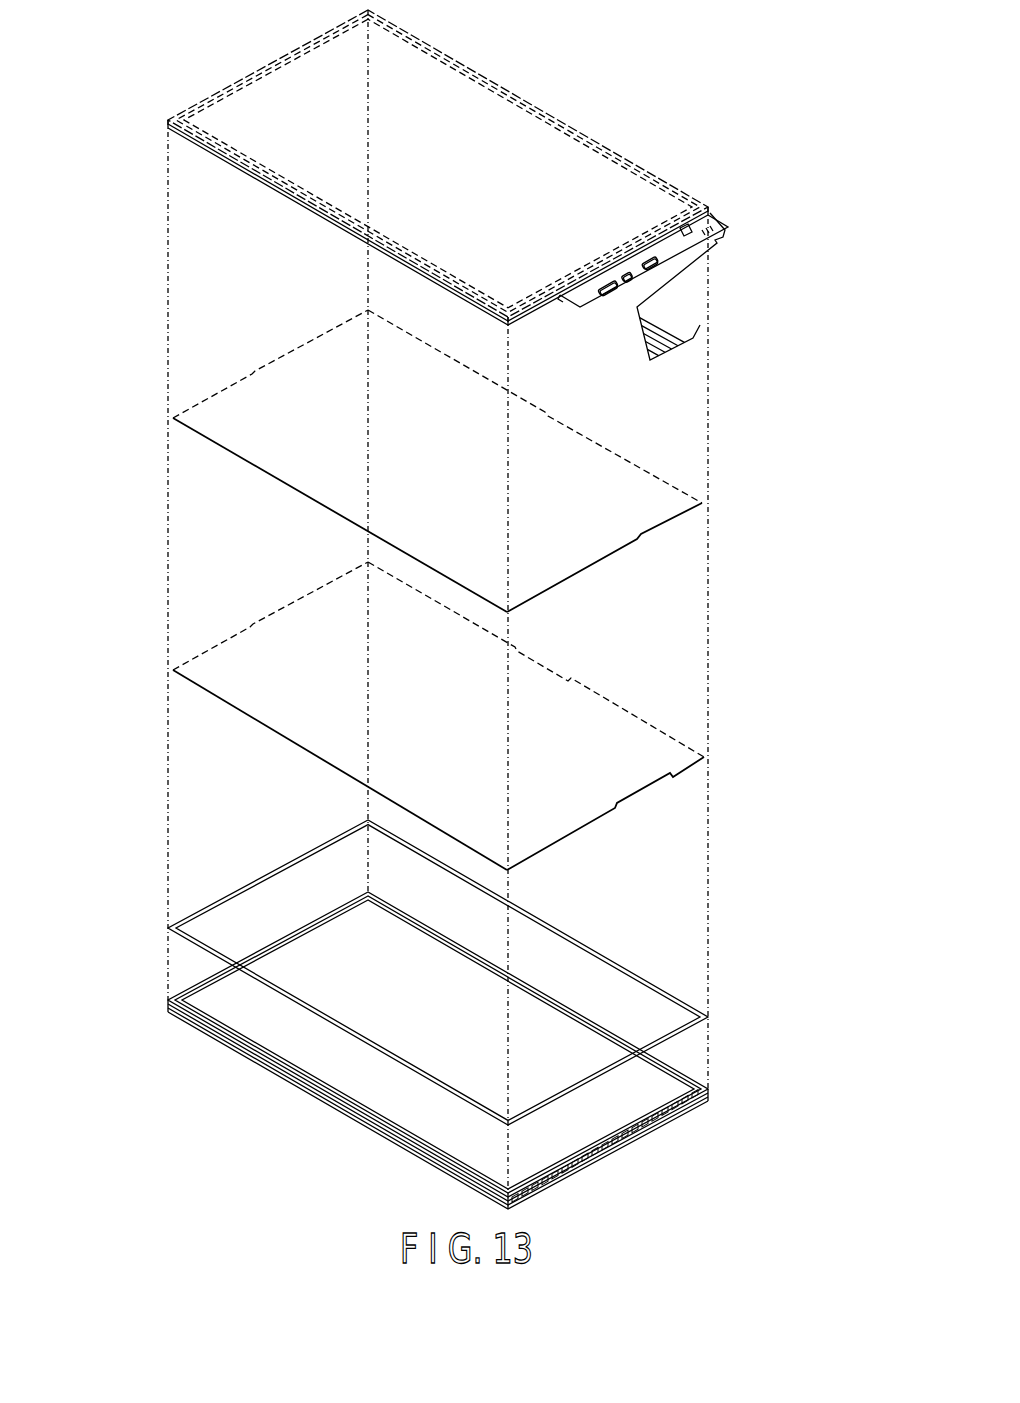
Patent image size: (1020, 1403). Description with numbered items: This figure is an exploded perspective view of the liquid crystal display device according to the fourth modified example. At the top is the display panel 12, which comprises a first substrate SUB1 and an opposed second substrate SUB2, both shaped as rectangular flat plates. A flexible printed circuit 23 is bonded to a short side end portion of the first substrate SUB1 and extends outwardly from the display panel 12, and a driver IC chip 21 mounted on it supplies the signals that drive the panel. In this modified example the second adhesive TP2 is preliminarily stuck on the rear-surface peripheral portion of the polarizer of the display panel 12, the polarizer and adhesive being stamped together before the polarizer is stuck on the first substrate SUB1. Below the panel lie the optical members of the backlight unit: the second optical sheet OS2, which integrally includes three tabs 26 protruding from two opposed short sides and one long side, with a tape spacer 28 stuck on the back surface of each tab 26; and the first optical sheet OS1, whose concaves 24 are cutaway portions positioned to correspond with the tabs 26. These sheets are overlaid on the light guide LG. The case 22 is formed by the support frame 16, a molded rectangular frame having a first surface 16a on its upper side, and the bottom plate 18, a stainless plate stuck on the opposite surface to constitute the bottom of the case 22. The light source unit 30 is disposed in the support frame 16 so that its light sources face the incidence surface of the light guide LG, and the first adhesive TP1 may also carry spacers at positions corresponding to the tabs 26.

The display panel 12 is at (480, 201).
The second adhesive TP2 is at (590, 162).
The first substrate SUB1 is at (712, 210).
The second substrate SUB2 is at (692, 207).
The driver IC chip 21 is at (603, 293).
The flexible printed circuit 23 is at (628, 325).
The tab 26 is at (437, 461).
The second optical sheet OS2 is at (437, 461).
The spacer 28 is at (604, 557).
The concave 24 is at (438, 716).
The first optical sheet OS1 is at (292, 718).
The case 22 is at (410, 1014).
The support frame 16 is at (410, 1010).
The first surface 16a is at (200, 980).
The first adhesive TP1 is at (297, 1002).
The light guide LG is at (323, 1068).
The bottom plate 18 is at (253, 1058).
The light source unit 30 is at (630, 1130).